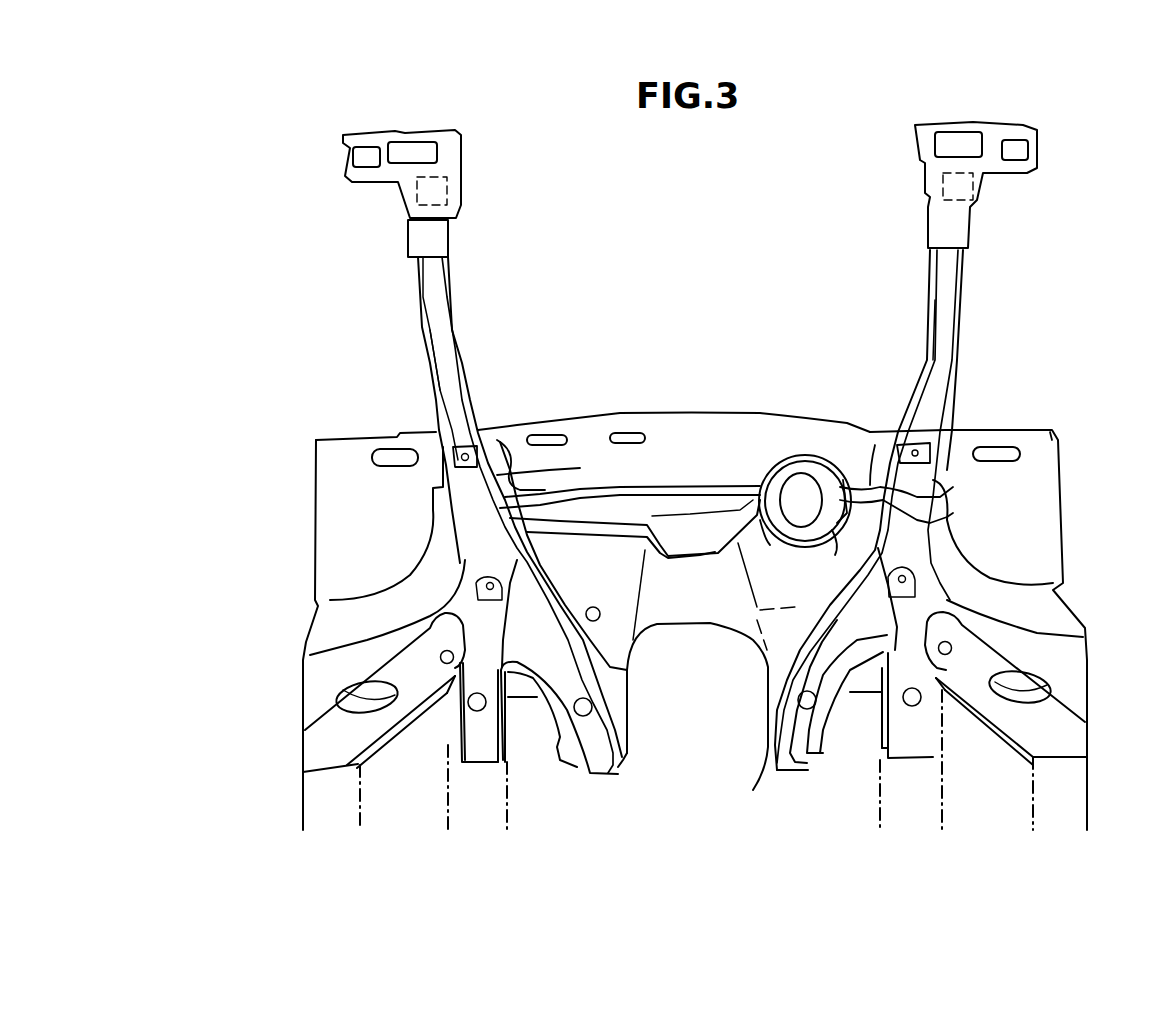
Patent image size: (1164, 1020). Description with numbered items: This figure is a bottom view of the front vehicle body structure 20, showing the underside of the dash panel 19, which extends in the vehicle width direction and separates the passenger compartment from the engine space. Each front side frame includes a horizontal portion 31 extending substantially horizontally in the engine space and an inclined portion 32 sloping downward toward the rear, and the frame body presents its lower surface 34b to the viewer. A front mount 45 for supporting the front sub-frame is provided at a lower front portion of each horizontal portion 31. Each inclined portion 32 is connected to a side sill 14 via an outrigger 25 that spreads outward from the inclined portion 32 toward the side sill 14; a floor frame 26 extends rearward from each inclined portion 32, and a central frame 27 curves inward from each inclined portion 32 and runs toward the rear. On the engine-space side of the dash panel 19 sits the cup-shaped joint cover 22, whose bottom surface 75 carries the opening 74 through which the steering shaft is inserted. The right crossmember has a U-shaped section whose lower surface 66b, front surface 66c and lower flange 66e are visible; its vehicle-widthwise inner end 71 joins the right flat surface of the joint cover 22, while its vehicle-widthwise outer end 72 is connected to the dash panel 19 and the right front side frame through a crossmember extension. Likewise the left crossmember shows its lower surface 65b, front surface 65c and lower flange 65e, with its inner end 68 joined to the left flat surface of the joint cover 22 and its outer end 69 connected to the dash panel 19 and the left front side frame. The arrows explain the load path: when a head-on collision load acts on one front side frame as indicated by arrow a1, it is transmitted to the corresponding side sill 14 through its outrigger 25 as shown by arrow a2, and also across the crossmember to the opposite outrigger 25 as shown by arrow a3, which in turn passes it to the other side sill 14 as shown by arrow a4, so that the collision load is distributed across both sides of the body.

The vehicle body front structure 20 is at (240, 88).
The front mount 45 is at (453, 185).
The horizontal portion 31 is at (447, 313).
The lower surface 34b is at (445, 352).
The vehicle-widthwise outer end of right crossmember 72 is at (508, 466).
The cup-shaped joint cover 22 is at (775, 475).
The opening 74 is at (797, 478).
The bottom surface 75 is at (815, 468).
The lower flange 65e is at (868, 478).
The dash panel 19 is at (1032, 425).
The lower surface 66b is at (590, 472).
The lower flange 66e is at (635, 488).
The front surface 66c is at (595, 530).
The vehicle-widthwise inner end of right crossmember 71 is at (765, 530).
The vehicle-widthwise inner end of left crossmember 68 is at (842, 525).
The front surface 65c is at (845, 530).
The lower surface 65b is at (940, 490).
The vehicle-widthwise outer end of left crossmember 69 is at (940, 518).
The outrigger 25 is at (322, 695).
The inclined portion 32 is at (473, 743).
The side sill 14 is at (298, 787).
The floor frame 26 is at (507, 805).
The central frame 27 is at (612, 757).
The arrow a1 is at (925, 440).
The arrow a2 is at (1068, 722).
The arrow a3 is at (850, 500).
The arrow a4 is at (445, 632).